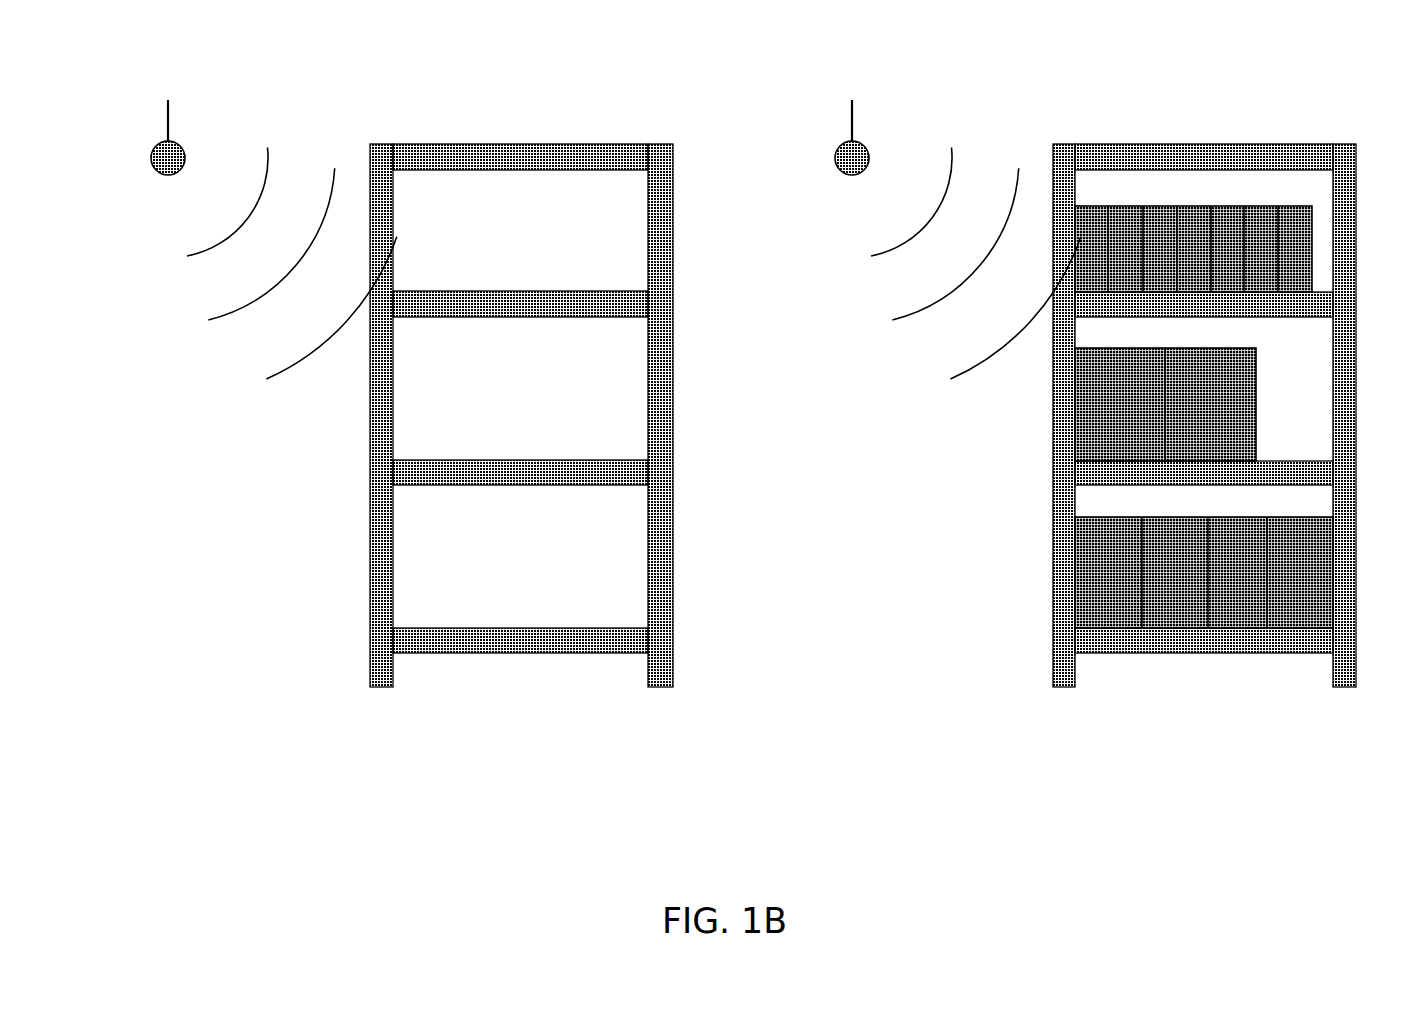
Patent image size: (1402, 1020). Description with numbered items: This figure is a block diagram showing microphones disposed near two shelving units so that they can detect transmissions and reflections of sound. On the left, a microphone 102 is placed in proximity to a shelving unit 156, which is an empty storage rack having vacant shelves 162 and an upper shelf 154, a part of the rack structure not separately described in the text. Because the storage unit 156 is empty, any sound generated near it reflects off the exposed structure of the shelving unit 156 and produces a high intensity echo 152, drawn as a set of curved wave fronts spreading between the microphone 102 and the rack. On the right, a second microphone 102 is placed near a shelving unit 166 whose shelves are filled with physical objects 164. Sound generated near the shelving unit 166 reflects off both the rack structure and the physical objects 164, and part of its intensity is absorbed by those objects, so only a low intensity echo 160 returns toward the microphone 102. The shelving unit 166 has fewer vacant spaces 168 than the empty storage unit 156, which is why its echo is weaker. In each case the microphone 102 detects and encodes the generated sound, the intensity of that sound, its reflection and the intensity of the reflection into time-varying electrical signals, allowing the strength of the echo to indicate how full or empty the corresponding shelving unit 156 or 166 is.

The microphone 102 is at (168, 142).
The high intensity echo 152 is at (273, 165).
The shelf of empty storage rack 154 is at (500, 135).
The shelving unit 156 is at (673, 153).
The low intensity echo 160 is at (952, 180).
The vacant shelves 162 is at (602, 237).
The physical objects 164 is at (1087, 427).
The shelving unit 166 is at (1087, 145).
The vacant spaces 168 is at (1290, 372).